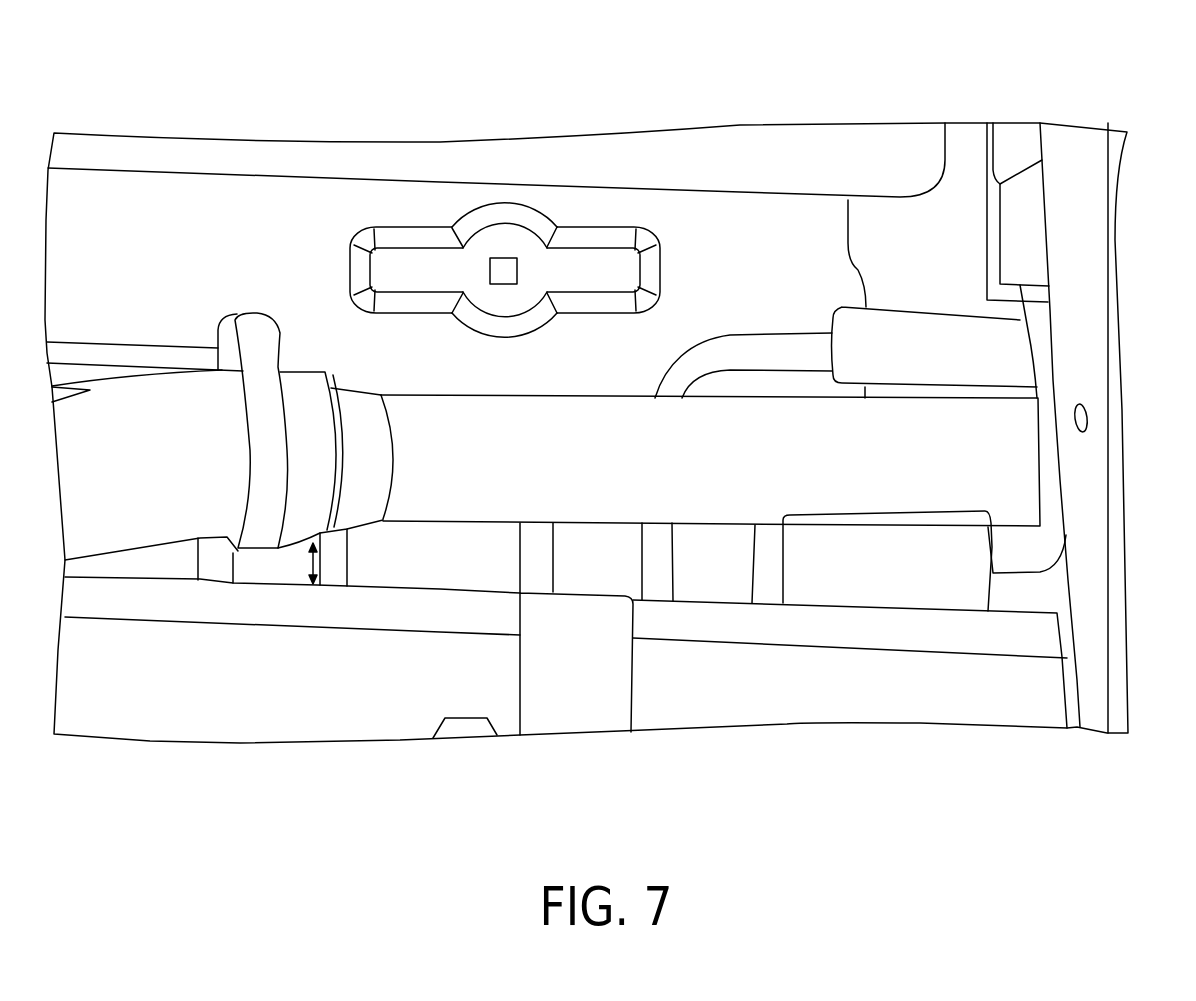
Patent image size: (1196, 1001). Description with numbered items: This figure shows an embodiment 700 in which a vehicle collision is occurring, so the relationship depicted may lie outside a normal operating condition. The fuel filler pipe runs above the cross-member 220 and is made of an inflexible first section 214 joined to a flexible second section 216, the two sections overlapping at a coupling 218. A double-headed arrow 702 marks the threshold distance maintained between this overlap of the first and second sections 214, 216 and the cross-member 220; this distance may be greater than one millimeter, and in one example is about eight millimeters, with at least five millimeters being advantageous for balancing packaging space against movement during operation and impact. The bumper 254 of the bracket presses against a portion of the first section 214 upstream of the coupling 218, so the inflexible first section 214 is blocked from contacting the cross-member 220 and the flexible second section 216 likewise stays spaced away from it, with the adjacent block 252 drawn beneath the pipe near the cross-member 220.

The embodiment 700 is at (1090, 31).
The first section 214 is at (668, 466).
The second section 216 is at (132, 485).
The coupling 218 is at (281, 372).
The cross-member 220 is at (207, 710).
The support block 252 is at (557, 690).
The bumper 254 is at (864, 580).
The threshold distance 702 is at (315, 584).